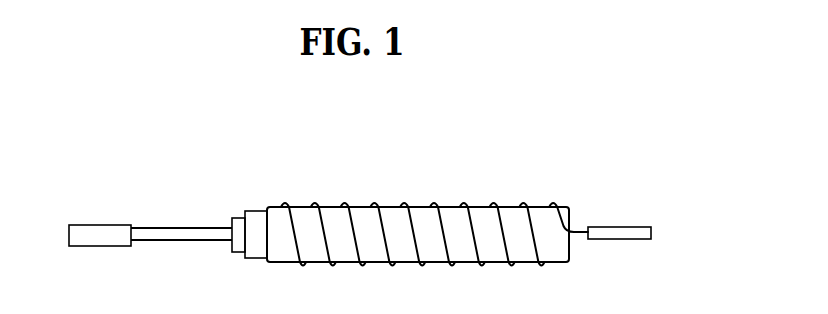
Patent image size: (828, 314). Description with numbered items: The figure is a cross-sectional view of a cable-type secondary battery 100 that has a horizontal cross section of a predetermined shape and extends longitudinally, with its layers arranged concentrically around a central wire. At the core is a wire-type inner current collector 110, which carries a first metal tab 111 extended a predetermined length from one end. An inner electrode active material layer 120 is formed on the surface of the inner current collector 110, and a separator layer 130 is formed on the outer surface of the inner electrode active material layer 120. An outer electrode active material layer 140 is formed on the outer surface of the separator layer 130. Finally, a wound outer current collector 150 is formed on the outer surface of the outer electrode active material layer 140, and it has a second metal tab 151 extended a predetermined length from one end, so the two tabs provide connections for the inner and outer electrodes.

The cable-type secondary battery 100 is at (452, 166).
The wire-type inner current collector 110 is at (177, 228).
The first metal tab 111 is at (110, 225).
The inner electrode active material layer 120 is at (240, 218).
The separator layer 130 is at (252, 211).
The outer electrode active material layer 140 is at (359, 207).
The outer current collector 150 is at (522, 202).
The second metal tab 151 is at (620, 227).